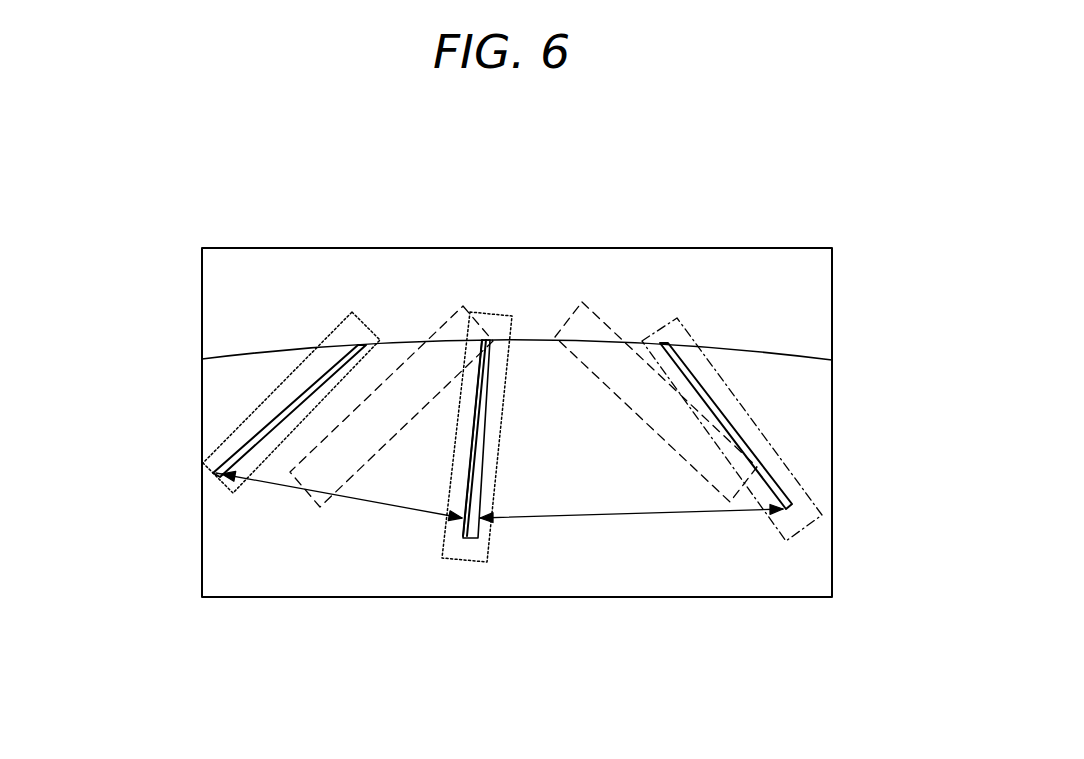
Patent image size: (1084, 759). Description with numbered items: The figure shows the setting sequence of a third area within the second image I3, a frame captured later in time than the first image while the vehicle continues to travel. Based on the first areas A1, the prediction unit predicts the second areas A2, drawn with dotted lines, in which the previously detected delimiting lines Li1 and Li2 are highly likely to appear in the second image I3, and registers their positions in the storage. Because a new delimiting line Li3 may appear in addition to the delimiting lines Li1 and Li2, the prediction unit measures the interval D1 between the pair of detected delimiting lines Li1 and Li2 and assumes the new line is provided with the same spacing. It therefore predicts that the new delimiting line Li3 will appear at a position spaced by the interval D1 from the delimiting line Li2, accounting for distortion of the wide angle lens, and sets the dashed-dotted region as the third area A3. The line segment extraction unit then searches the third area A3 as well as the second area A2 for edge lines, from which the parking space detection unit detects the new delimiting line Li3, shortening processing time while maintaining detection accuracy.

The second image I3 is at (788, 248).
The delimiting line Li1 is at (273, 412).
The delimiting line Li2 is at (473, 382).
The new delimiting line Li3 is at (776, 476).
The first area A1 is at (465, 308).
The second area A2 is at (335, 328).
The third area A3 is at (650, 340).
The interval D1 is at (366, 502).